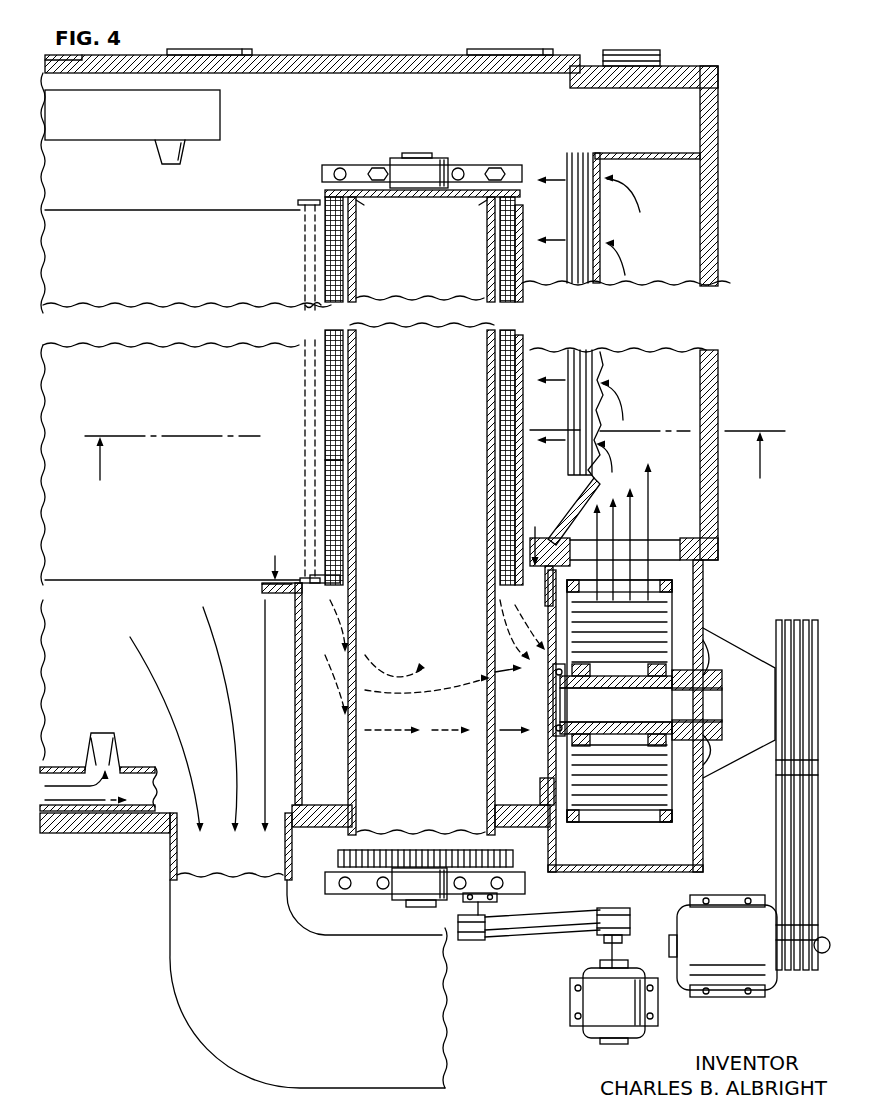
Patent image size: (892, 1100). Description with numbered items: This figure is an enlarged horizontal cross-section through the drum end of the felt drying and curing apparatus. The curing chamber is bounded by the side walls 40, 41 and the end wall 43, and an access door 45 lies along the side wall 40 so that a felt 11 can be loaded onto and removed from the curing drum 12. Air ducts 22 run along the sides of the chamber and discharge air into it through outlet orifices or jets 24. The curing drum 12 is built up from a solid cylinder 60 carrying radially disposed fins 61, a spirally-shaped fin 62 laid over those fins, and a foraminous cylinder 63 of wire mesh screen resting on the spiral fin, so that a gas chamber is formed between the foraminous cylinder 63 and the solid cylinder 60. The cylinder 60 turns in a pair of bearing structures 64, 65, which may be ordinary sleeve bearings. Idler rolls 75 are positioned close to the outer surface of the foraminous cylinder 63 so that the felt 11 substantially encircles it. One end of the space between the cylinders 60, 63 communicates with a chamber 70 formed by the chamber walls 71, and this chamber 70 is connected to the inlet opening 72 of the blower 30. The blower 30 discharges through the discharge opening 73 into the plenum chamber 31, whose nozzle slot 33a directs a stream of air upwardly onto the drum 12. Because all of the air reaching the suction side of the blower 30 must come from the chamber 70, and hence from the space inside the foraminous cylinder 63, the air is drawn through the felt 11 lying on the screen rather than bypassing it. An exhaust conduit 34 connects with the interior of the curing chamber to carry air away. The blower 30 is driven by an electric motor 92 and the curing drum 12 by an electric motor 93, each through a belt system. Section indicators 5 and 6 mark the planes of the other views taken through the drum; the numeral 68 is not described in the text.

The section line 5 is at (401, 542).
The section line 6 is at (437, 465).
The felt 11 is at (262, 215).
The curing drum 12 is at (372, 209).
The air ducts 22 is at (214, 100).
The outlet orifices or jets 24 is at (185, 152).
The blower 30 is at (670, 791).
The plenum chamber 31 is at (677, 409).
The slot 33a is at (567, 462).
The exhaust conduit 34 is at (190, 1029).
The side wall 40 is at (692, 75).
The side wall 41 is at (135, 833).
The end wall 43 is at (713, 238).
The access door 45 is at (447, 57).
The cylinder 60 is at (357, 406).
The radially disposed fins 61 is at (346, 449).
The spirally-shaped fin 62 is at (335, 513).
The foraminous cylinder 63 is at (343, 373).
The bearing structure 64 is at (446, 160).
The bearing structure 65 is at (398, 891).
The end plate 68 is at (478, 190).
The chamber 70 is at (312, 693).
The chamber walls 71 is at (300, 651).
The inlet opening 72 is at (545, 602).
The discharge opening 73 is at (677, 558).
The idler rolls 75 is at (305, 398).
The electric motor 92 is at (725, 996).
The electric motor 93 is at (578, 973).